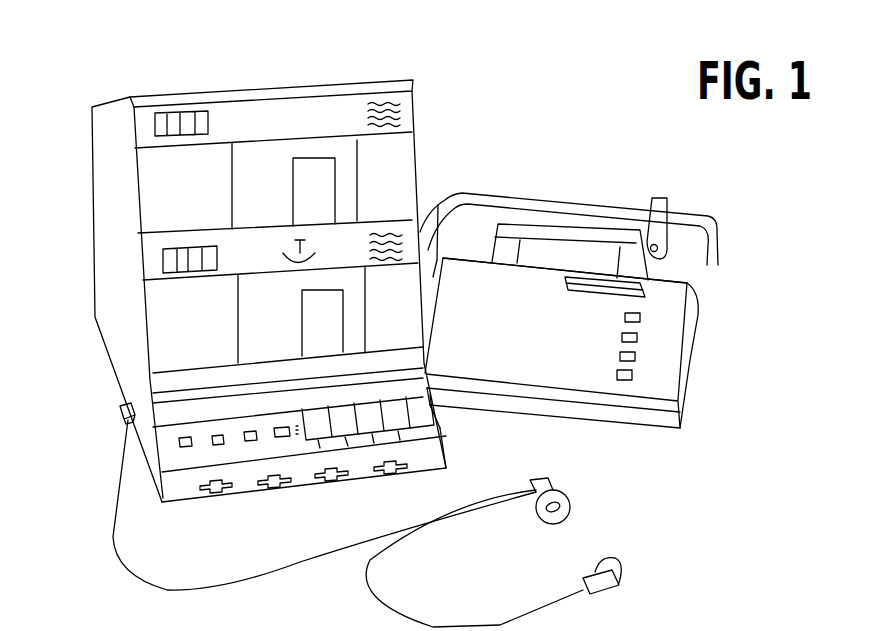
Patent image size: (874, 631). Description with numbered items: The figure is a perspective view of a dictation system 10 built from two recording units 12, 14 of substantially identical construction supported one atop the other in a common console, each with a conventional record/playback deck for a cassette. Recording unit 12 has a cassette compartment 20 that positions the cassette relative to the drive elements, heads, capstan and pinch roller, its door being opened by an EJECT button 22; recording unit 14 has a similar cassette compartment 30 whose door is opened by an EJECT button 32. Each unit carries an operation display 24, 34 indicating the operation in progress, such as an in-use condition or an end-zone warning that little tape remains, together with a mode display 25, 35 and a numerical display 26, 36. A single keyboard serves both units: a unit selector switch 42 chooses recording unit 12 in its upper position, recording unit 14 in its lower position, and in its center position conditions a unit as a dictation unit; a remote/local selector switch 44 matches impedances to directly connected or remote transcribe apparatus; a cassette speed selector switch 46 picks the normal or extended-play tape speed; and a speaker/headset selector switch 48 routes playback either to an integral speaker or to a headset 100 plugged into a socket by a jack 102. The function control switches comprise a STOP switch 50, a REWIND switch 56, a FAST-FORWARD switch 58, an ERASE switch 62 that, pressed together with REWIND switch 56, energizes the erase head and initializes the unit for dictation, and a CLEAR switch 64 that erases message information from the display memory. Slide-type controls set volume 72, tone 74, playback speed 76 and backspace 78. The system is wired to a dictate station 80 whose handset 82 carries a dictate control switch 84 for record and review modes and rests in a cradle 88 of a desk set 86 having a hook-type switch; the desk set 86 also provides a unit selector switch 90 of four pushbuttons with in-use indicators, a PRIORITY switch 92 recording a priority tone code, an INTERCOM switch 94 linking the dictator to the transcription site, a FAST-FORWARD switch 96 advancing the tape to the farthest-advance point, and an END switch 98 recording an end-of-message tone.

The dictation system 10 is at (110, 68).
The recording unit 12 is at (162, 194).
The recording unit 14 is at (174, 327).
The cassette compartment 20 is at (307, 188).
The EJECT button 22 is at (392, 157).
The operation display 24 is at (388, 103).
The mode display 25 is at (306, 110).
The numerical display 26 is at (181, 113).
The cassette compartment 30 is at (315, 327).
The EJECT button 32 is at (392, 317).
The operation display 34 is at (390, 230).
The mode display 35 is at (282, 255).
The numerical display 36 is at (163, 263).
The unit selector switch 42 is at (285, 438).
The remote/local selector switch 44 is at (250, 442).
The cassette speed selector switch 46 is at (215, 445).
The speaker/headset selector switch 48 is at (180, 443).
The STOP switch 50 is at (350, 445).
The REWIND switch 56 is at (375, 452).
The FAST-FORWARD switch 58 is at (444, 468).
The ERASE switch 62 is at (435, 430).
The CLEAR switch 64 is at (432, 414).
The volume control 72 is at (215, 490).
The tone control 74 is at (277, 486).
The playback speed control 76 is at (333, 480).
The backspace control 78 is at (400, 470).
The dictate station 80 is at (567, 155).
The handset 82 is at (521, 200).
The dictate control switch 84 is at (666, 198).
The desk set 86 is at (582, 376).
The cradle 88 is at (593, 253).
The unit selector switch 90 is at (563, 283).
The PRIORITY switch 92 is at (640, 316).
The INTERCOM switch 94 is at (622, 338).
The FAST-FORWARD switch 96 is at (620, 357).
The END switch 98 is at (627, 380).
The headset 100 is at (585, 514).
The jack 102 is at (117, 403).